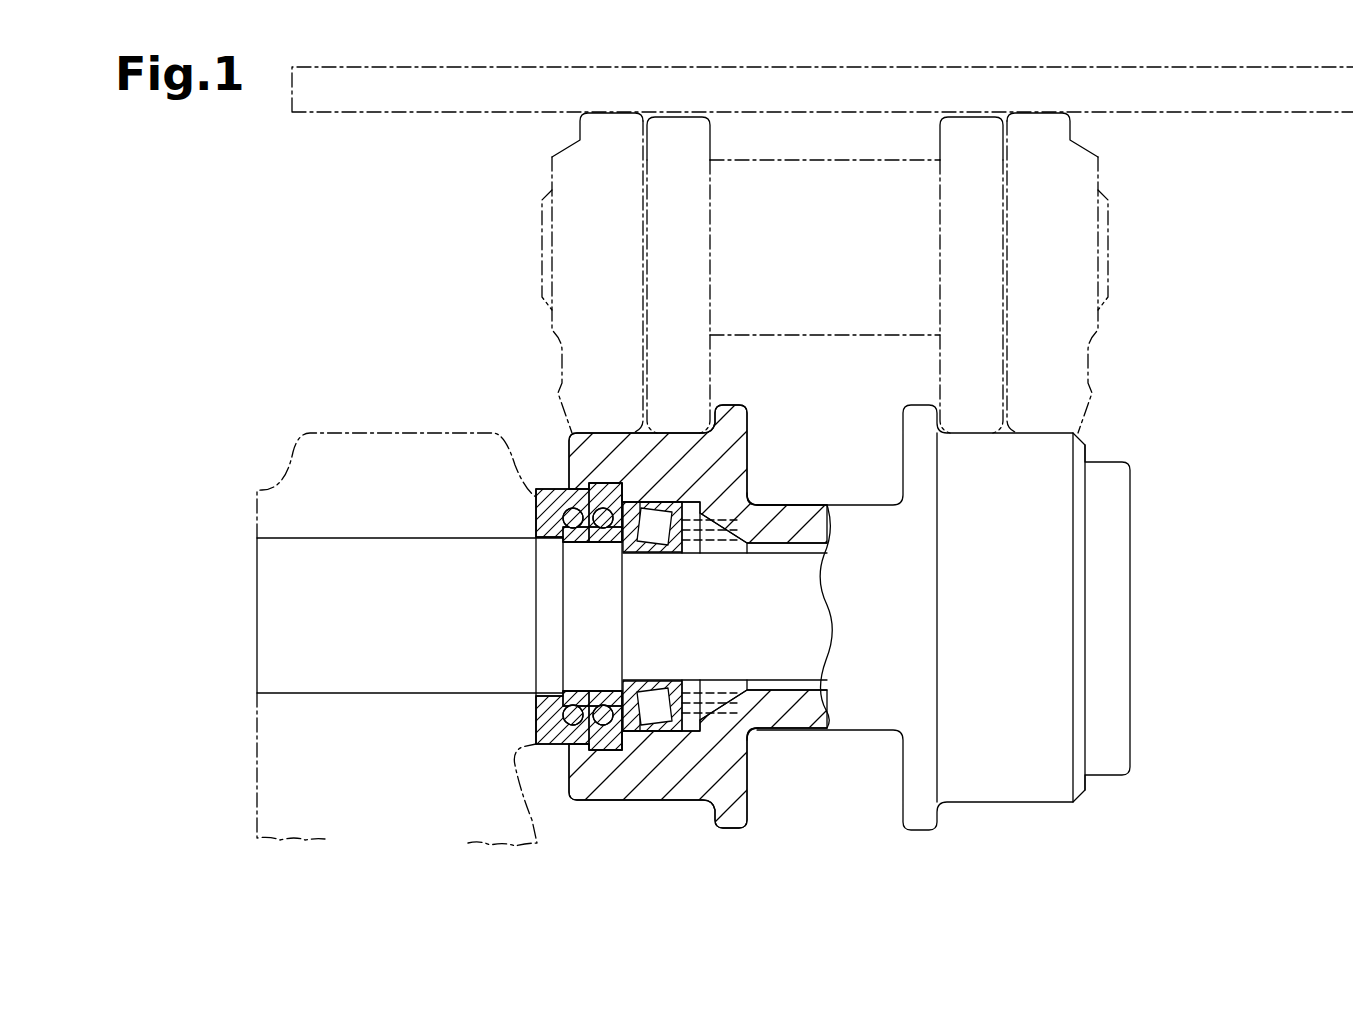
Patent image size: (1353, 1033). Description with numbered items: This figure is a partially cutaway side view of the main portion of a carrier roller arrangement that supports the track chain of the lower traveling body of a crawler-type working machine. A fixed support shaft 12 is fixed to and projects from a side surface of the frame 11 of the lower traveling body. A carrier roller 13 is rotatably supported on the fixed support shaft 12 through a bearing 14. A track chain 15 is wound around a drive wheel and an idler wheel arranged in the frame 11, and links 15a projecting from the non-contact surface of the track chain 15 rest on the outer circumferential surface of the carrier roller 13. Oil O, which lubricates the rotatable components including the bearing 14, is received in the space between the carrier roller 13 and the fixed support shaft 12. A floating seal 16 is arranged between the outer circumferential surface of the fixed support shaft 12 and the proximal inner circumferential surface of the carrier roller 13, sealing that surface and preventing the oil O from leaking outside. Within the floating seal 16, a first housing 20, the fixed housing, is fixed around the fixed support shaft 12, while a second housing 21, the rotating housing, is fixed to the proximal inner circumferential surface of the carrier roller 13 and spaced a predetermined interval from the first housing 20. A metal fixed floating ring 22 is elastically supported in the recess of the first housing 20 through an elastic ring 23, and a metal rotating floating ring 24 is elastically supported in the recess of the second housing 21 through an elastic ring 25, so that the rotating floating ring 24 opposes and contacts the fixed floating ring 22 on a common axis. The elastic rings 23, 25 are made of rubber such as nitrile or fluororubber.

The frame 11 is at (398, 433).
The fixed support shaft 12 is at (390, 540).
The carrier roller 13 is at (852, 505).
The bearing 14 is at (660, 504).
The track chain 15 is at (1262, 113).
The links 15a is at (550, 167).
The floating seal 16 is at (540, 490).
The first housing 20 is at (536, 500).
The second housing 21 is at (604, 489).
The fixed floating ring 22 is at (566, 541).
The elastic ring 23 is at (560, 517).
The rotating floating ring 24 is at (598, 541).
The elastic ring 25 is at (622, 543).
The oil O is at (758, 507).